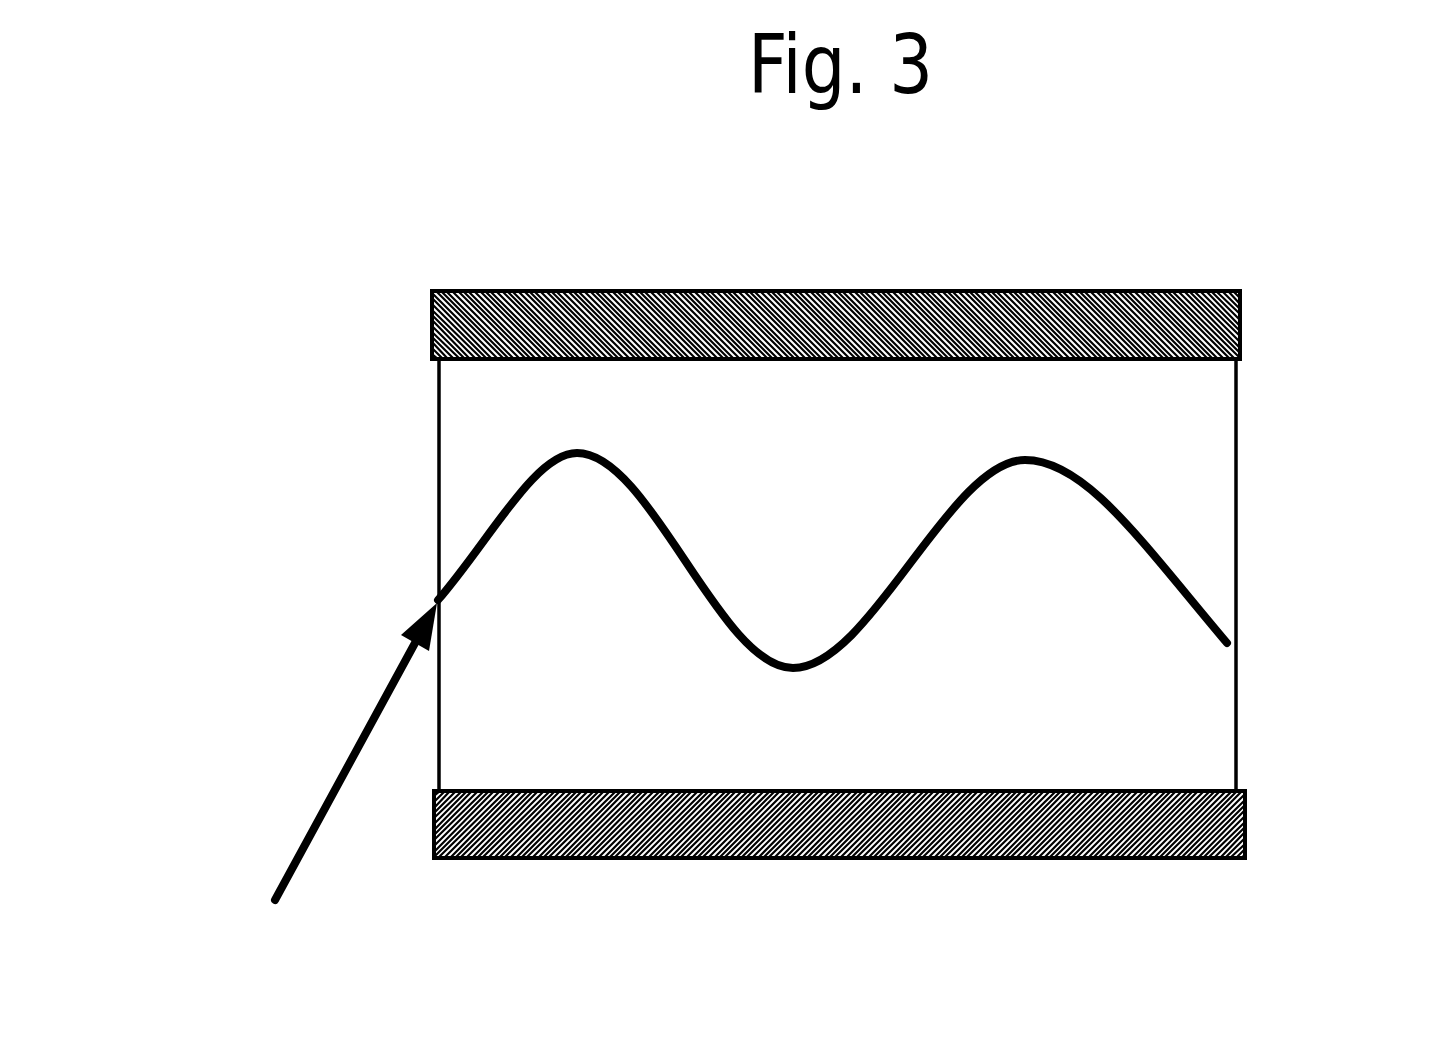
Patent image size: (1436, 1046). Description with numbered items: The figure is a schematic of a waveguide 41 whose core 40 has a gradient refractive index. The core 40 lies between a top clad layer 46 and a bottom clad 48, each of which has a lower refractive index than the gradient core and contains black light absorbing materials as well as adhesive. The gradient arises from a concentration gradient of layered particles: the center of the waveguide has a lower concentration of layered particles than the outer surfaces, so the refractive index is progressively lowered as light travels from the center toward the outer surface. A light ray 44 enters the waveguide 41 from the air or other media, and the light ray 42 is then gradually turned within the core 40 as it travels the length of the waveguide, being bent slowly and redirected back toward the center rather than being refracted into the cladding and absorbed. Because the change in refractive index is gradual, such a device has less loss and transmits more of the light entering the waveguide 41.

The core 40 is at (1175, 435).
The waveguide 41 is at (410, 440).
The light ray 42 is at (1192, 587).
The light ray 44 is at (362, 713).
The top clad layer 46 is at (1137, 310).
The bottom clad 48 is at (1235, 788).